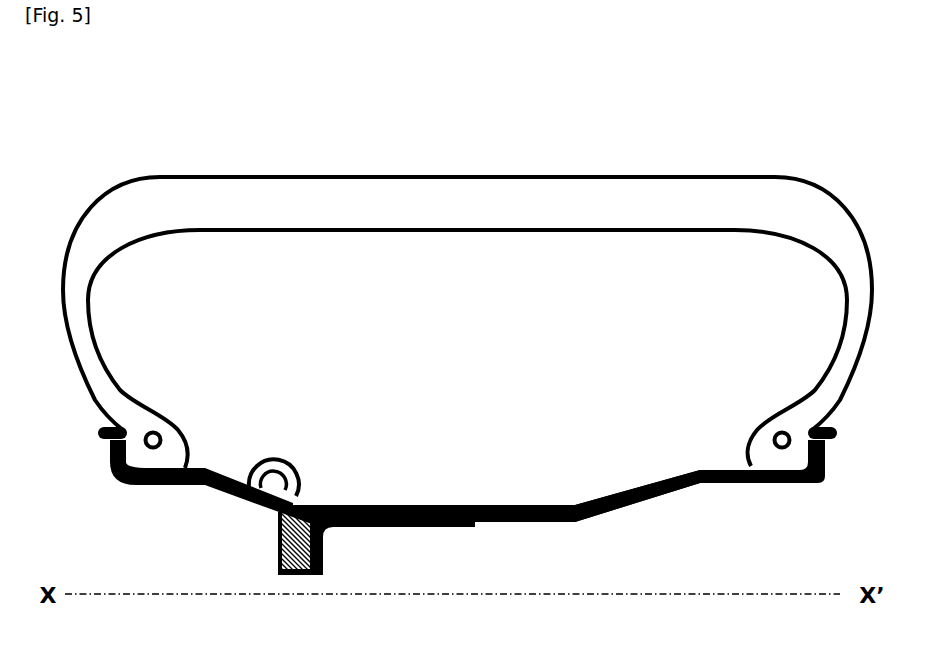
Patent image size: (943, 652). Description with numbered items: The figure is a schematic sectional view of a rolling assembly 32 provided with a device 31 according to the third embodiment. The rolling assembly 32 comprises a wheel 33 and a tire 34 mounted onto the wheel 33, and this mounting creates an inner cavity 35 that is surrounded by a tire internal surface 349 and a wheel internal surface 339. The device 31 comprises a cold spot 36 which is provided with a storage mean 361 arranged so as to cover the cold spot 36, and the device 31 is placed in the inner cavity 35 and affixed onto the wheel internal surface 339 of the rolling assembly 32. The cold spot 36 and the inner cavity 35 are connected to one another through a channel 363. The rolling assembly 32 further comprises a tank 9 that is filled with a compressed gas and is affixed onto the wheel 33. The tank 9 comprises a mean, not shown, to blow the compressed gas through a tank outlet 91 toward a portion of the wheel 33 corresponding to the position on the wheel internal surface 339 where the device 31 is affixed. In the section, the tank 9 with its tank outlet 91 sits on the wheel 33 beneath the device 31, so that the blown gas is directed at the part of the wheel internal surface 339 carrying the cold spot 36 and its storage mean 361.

The rolling assembly 32 is at (759, 130).
The tire 34 is at (215, 205).
The tire internal surface 349 is at (528, 232).
The inner cavity 35 is at (457, 370).
The wheel 33 is at (730, 483).
The wheel internal surface 339 is at (603, 497).
The device 31 is at (299, 445).
The cold spot 36 is at (252, 470).
The storage mean 361 is at (268, 456).
The channel 363 is at (300, 495).
The tank 9 is at (277, 563).
The tank outlet 91 is at (277, 512).